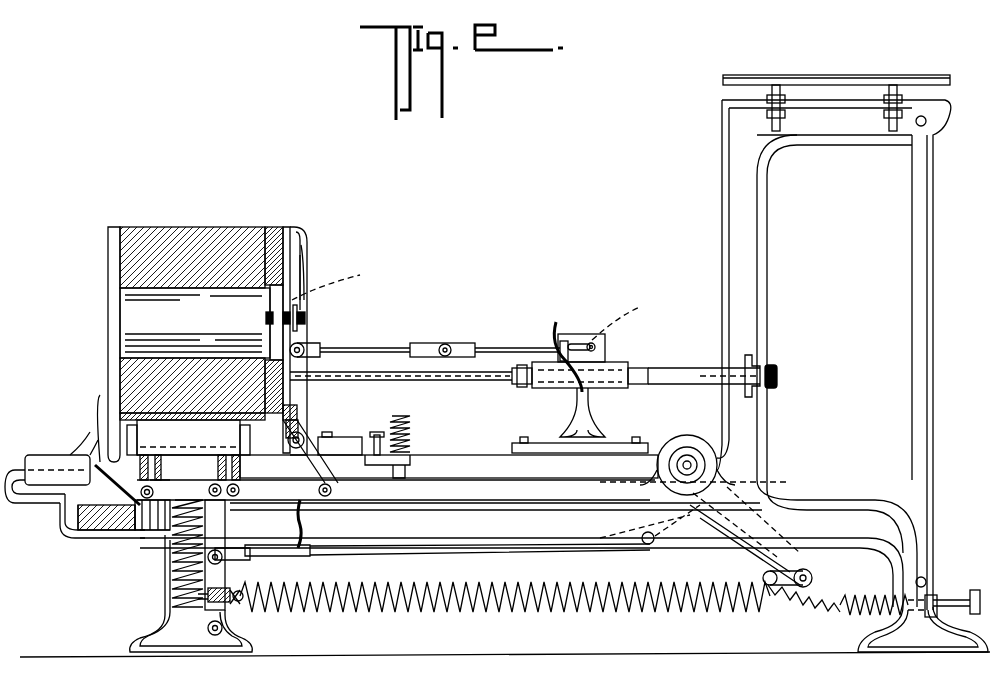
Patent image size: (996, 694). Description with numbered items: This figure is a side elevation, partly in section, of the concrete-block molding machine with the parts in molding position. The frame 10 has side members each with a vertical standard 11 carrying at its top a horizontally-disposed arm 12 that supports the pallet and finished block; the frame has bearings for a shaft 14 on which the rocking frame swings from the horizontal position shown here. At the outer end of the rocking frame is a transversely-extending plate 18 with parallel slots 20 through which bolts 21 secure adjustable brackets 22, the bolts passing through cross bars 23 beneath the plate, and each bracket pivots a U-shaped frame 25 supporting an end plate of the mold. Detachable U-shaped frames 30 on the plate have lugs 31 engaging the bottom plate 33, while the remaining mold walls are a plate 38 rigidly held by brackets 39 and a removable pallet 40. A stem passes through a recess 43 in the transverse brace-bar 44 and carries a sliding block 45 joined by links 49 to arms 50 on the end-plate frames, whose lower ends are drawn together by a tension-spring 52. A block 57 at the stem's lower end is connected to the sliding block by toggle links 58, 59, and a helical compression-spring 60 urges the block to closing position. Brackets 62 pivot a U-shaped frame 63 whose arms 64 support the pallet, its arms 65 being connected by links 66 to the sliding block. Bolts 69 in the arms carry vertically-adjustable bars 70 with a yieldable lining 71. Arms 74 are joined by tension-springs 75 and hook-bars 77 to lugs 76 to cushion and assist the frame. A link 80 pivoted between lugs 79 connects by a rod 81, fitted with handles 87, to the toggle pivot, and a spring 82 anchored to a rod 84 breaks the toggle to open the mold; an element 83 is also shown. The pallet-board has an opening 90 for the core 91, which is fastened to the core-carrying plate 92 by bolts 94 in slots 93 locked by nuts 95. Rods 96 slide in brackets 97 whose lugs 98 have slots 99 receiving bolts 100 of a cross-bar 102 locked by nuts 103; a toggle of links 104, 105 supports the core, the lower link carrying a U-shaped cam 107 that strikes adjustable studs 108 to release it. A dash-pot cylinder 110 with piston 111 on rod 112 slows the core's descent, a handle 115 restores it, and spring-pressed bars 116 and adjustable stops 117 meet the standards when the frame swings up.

The frame 10 is at (520, 543).
The vertical standard 11 is at (757, 255).
The horizontally-disposed arm 12 is at (836, 355).
The shaft 14 is at (690, 465).
The transversely-extending plate 18 is at (140, 487).
The parallel slot 20 is at (140, 500).
The bolt 21 is at (225, 460).
The bracket 22 is at (92, 430).
The cross bar 23 is at (135, 515).
The U-shaped frame 25 is at (305, 340).
The detachable U-shaped frame 30 is at (140, 432).
The lug 31 is at (140, 425).
The bottom plate 33 is at (150, 410).
The plate 38 is at (108, 272).
The bracket 39 is at (100, 410).
The removable pallet 40 is at (276, 228).
The recess 43 is at (145, 530).
The transverse brace-bar 44 is at (100, 530).
The block 45 is at (160, 525).
The link 49 is at (150, 535).
The arm 50 is at (160, 492).
The tension-spring 52 is at (120, 530).
The block 57 is at (165, 620).
The link 58 is at (230, 590).
The link 59 is at (226, 530).
The helical compression-spring 60 is at (172, 575).
The bracket 62 is at (340, 437).
The U-shaped frame 63 is at (300, 428).
The arm 64 is at (278, 300).
The arm 65 is at (303, 440).
The link 66 is at (314, 524).
The bolt 69 is at (772, 122).
The vertically-adjustable bar 70 is at (723, 84).
The lining 71 is at (765, 78).
The arm 74 is at (790, 555).
The tension-spring 75 is at (505, 537).
The lug 76 is at (210, 612).
The adjustable hook-bar 77 is at (240, 588).
The lug 79 is at (700, 516).
The link 80 is at (650, 531).
The rod 81 is at (328, 550).
The spring 82 is at (800, 601).
The knob 83 is at (968, 603).
The rod 84 is at (852, 612).
The handle 87 is at (300, 548).
The opening 90 is at (300, 290).
The core 91 is at (195, 323).
The core-carrying plate 92 is at (303, 255).
The slot 93 is at (335, 283).
The bolt 94 is at (297, 325).
The nut 95 is at (270, 313).
The rod 96 is at (480, 382).
The bracket 97 is at (557, 387).
The lug 98 is at (596, 342).
The slot 99 is at (578, 342).
The bolt 100 is at (603, 347).
The cross-bar 102 is at (637, 315).
The nut 103 is at (596, 342).
The link 104 is at (410, 334).
The lower link 105 is at (522, 347).
The U-shaped cam 107 is at (557, 322).
The adjustable stud 108 is at (758, 360).
The elongated cylinder 110 is at (678, 377).
The piston 111 is at (524, 388).
The rod 112 is at (470, 395).
The handle 115 is at (300, 265).
The spring-pressed bar 116 is at (404, 416).
The adjustable stop 117 is at (378, 432).